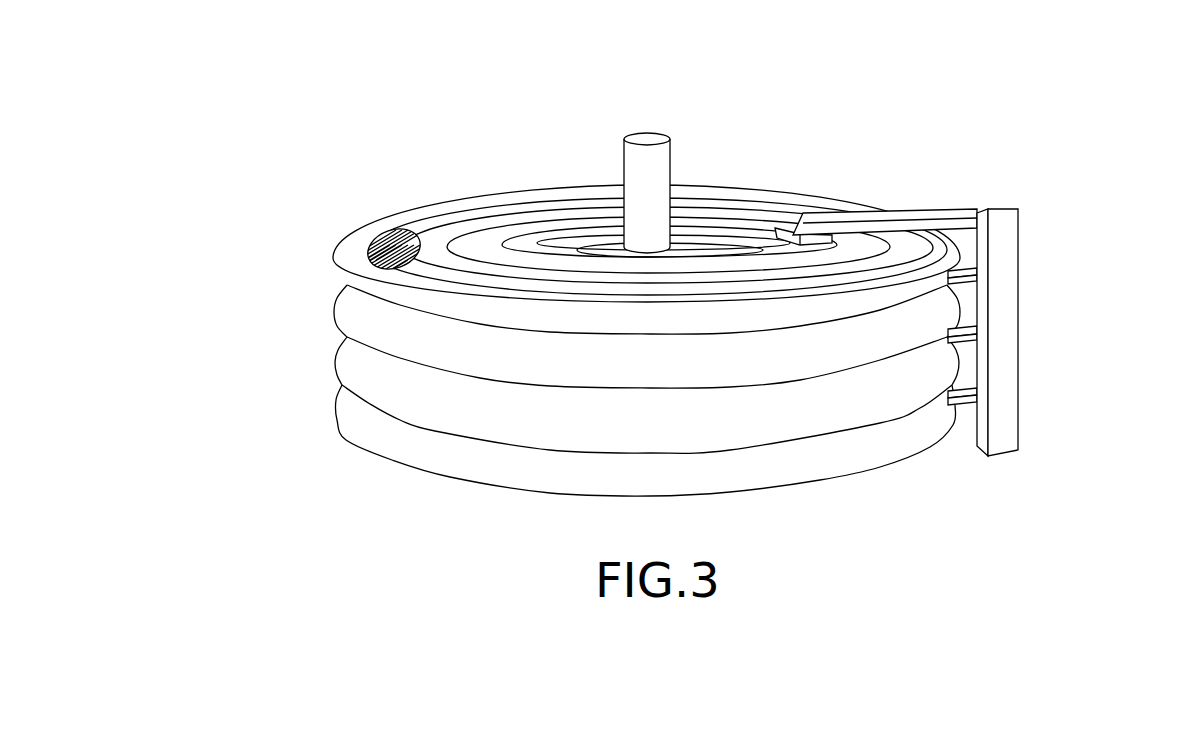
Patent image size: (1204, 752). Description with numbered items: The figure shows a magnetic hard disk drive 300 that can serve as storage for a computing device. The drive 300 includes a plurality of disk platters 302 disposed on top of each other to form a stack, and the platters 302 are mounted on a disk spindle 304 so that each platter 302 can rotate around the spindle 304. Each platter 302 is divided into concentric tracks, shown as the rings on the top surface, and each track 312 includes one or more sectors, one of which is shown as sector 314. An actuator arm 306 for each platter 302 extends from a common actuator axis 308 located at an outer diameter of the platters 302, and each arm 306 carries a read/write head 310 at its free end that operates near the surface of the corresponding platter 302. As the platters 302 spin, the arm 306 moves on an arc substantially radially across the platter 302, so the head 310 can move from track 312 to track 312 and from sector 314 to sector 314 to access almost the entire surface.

The hard disk drive 300 is at (701, 250).
The disk platter 302 is at (358, 366).
The disk spindle 304 is at (598, 145).
The actuator arm 306 is at (925, 190).
The actuator axis 308 is at (1045, 325).
The read/write head 310 is at (776, 218).
The track 312 is at (475, 195).
The sector 314 is at (360, 225).